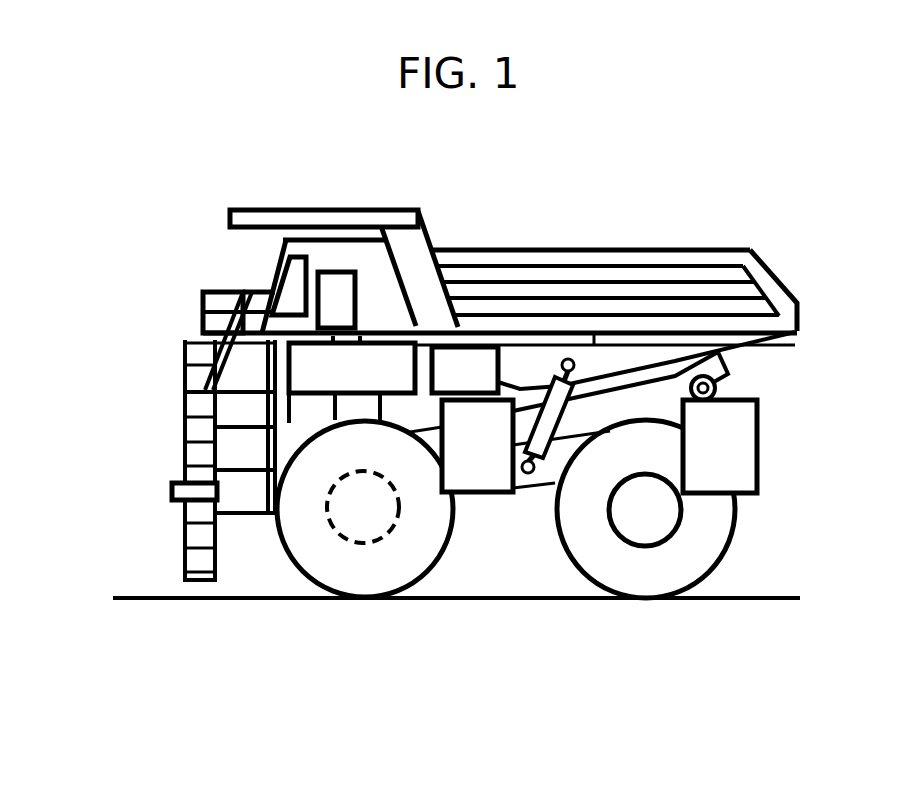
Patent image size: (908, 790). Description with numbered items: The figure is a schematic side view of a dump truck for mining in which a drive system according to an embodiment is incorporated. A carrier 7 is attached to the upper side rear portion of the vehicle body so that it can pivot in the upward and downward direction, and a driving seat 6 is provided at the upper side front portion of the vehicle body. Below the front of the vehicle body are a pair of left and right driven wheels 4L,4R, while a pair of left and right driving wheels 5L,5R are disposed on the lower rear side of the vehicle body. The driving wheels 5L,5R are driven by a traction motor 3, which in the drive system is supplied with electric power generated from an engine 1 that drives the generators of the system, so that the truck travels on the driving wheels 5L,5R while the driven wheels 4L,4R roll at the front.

The engine 1 is at (333, 377).
The traction motor 3 is at (650, 492).
The driven wheels 4L,4R is at (315, 557).
The driving wheels 5L,5R is at (594, 558).
The driving seat 6 is at (298, 278).
The carrier 7 is at (758, 255).